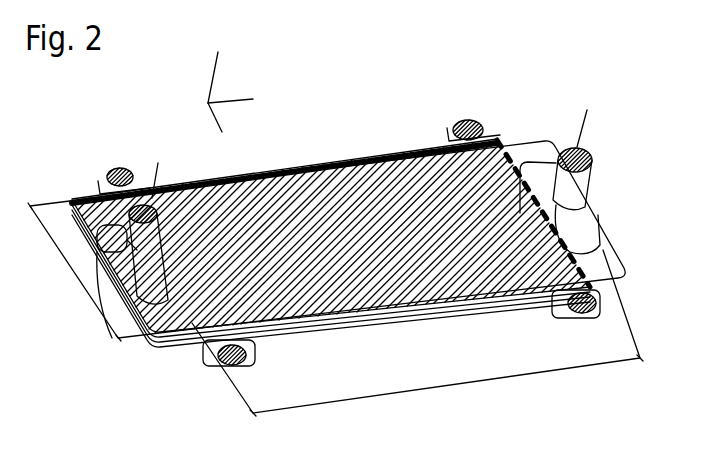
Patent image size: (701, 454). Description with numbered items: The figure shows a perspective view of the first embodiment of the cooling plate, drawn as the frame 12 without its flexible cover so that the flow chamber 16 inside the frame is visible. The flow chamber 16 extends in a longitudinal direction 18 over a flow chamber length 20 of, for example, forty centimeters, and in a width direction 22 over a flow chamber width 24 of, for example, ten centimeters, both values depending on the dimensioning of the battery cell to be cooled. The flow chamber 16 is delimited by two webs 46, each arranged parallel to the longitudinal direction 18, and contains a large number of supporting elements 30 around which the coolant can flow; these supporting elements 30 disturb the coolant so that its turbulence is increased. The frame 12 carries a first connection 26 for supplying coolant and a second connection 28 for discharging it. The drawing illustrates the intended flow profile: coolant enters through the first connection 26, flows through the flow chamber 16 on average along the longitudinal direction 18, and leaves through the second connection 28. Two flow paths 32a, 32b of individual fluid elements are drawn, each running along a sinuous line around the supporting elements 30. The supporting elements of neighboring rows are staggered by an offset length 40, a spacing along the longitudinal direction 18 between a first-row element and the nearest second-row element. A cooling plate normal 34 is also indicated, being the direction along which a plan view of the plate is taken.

The frame 12 is at (88, 197).
The flow chamber 16 is at (393, 312).
The longitudinal direction 18 is at (223, 102).
The flow chamber length 20 is at (443, 381).
The width direction 22 is at (207, 110).
The flow chamber width 24 is at (72, 273).
The first connection 26 is at (95, 303).
The second connection 28 is at (586, 184).
The supporting elements 30 is at (417, 148).
The flow path 32a is at (250, 333).
The flow path 32b is at (292, 328).
The cooling plate normal 34 is at (208, 77).
The offset length 40 is at (460, 303).
The webs 46 is at (310, 163).